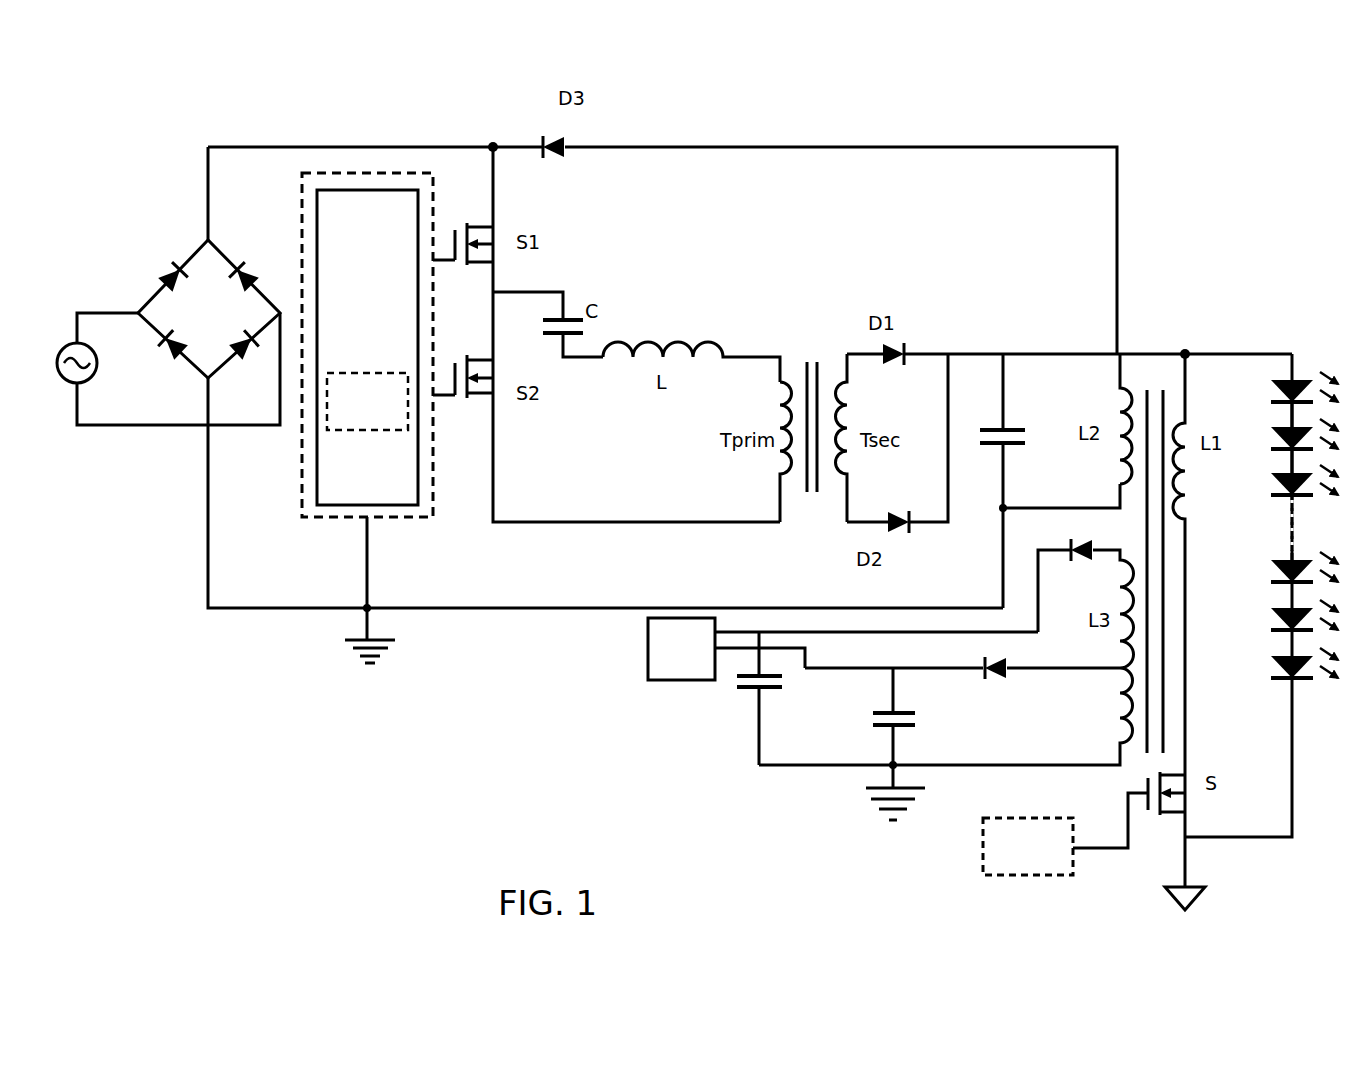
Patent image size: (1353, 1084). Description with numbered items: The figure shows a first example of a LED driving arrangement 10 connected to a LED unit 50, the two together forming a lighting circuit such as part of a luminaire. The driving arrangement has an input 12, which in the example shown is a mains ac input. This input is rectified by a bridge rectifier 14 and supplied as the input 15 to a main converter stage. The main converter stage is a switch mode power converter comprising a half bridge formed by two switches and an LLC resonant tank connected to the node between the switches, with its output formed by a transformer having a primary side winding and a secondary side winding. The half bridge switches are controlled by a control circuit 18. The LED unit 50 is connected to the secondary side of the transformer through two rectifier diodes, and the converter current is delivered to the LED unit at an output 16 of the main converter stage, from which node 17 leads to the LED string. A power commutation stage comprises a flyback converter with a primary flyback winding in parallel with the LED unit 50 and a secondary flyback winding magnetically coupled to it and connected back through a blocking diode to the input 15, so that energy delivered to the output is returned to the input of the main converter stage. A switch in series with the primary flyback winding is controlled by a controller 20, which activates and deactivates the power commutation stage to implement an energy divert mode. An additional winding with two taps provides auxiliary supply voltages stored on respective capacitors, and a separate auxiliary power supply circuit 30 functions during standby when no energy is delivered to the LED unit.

The LED driving arrangement 10 is at (1232, 197).
The input 12 is at (63, 348).
The bridge rectifier 14 is at (253, 237).
The input to a main converter stage 15 is at (493, 145).
The output of the main converter stage 16 is at (1185, 350).
The LED string input node 17 is at (1292, 350).
The control circuit 18 is at (372, 172).
The controller 20 is at (983, 831).
The auxiliary power supply circuit 30 is at (675, 683).
The LED unit 50 is at (1310, 366).